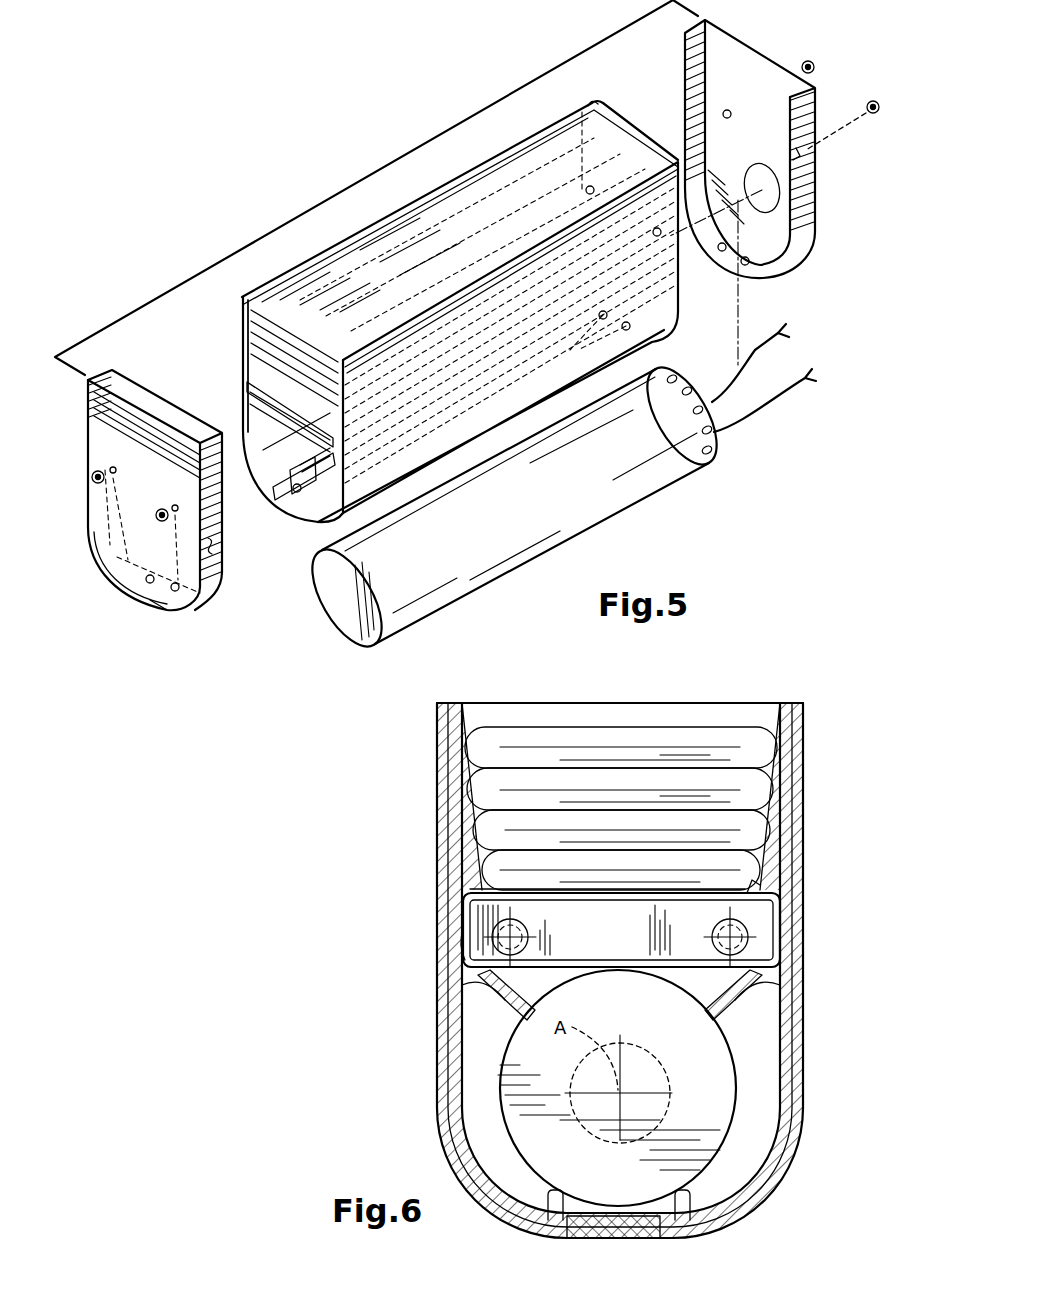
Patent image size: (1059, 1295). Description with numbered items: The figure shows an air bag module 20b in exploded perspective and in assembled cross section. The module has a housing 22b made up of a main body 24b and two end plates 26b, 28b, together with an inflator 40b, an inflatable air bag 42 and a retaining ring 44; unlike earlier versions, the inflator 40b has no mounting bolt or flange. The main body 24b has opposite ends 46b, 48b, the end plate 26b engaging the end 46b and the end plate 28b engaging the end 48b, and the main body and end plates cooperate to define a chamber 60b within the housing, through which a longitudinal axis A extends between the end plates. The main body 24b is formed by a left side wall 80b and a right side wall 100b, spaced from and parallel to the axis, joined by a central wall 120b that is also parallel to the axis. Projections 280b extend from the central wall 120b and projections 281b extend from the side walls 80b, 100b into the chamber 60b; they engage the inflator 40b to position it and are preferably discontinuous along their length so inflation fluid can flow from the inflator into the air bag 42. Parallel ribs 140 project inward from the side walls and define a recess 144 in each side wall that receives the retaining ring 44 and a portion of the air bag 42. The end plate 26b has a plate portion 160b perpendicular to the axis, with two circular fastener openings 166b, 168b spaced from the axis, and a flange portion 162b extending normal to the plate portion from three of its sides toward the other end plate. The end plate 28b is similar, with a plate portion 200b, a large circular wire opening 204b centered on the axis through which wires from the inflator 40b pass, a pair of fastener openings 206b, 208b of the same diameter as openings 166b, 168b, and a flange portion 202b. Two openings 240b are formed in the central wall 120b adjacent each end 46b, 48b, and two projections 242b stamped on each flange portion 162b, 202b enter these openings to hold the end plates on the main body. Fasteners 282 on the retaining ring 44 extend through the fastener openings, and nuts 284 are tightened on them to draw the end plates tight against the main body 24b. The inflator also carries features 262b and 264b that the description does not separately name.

In FIG. 5, the air bag module 20b is at (425, 88).
In FIG. 6, the air bag module 20b is at (724, 655).
In FIG. 5, the housing 22b is at (388, 166).
In FIG. 5, the main body 24b is at (540, 116).
In FIG. 6, the main body 24b is at (798, 703).
In FIG. 5, the end plate 26b is at (100, 574).
In FIG. 6, the end plate 26b is at (807, 811).
In FIG. 5, the end plate 28b is at (797, 266).
In FIG. 6, the end plate 28b is at (596, 701).
In FIG. 5, the inflator 40b is at (642, 506).
In FIG. 6, the inflator 40b is at (743, 1129).
In FIG. 5, the inflatable air bag 42 is at (393, 247).
In FIG. 5, the retaining ring 44 is at (297, 380).
In FIG. 6, the retaining ring 44 is at (757, 922).
In FIG. 5, the end of main body 46b is at (236, 355).
In FIG. 5, the end of main body 48b is at (591, 100).
In FIG. 6, the chamber 60b is at (530, 988).
In FIG. 5, the left side wall 80b is at (232, 372).
In FIG. 6, the left side wall 80b is at (436, 822).
In FIG. 5, the right side wall 100b is at (382, 456).
In FIG. 6, the right side wall 100b is at (806, 853).
In FIG. 5, the central wall 120b is at (298, 529).
In FIG. 6, the ribs 140 is at (475, 887).
In FIG. 6, the recess 144 is at (463, 945).
In FIG. 5, the plate portion 160b is at (141, 430).
In FIG. 5, the flange portion 162b is at (212, 546).
In FIG. 5, the fastener opening 166b is at (90, 368).
In FIG. 5, the fastener opening 168b is at (168, 608).
In FIG. 5, the plate portion 200b is at (755, 78).
In FIG. 5, the flange portion 202b is at (833, 187).
In FIG. 5, the wire opening 204b is at (770, 198).
In FIG. 6, the wire opening 204b is at (647, 1053).
In FIG. 5, the fastener opening 206b is at (724, 113).
In FIG. 5, the fastener opening 208b is at (803, 143).
In FIG. 5, the openings 240b is at (585, 345).
In FIG. 6, the openings 240b is at (653, 1220).
In FIG. 5, the projections 242b is at (746, 266).
In FIG. 6, the projections 242b is at (662, 1230).
In FIG. 5, the tube body 262b is at (625, 460).
In FIG. 5, the wires 264b is at (718, 433).
In FIG. 5, the projections 280b is at (283, 516).
In FIG. 6, the projections 280b is at (557, 1193).
In FIG. 5, the projections 281b is at (245, 405).
In FIG. 6, the projections 281b is at (530, 1005).
In FIG. 5, the fasteners 282 is at (232, 362).
In FIG. 5, the nuts 284 is at (162, 521).